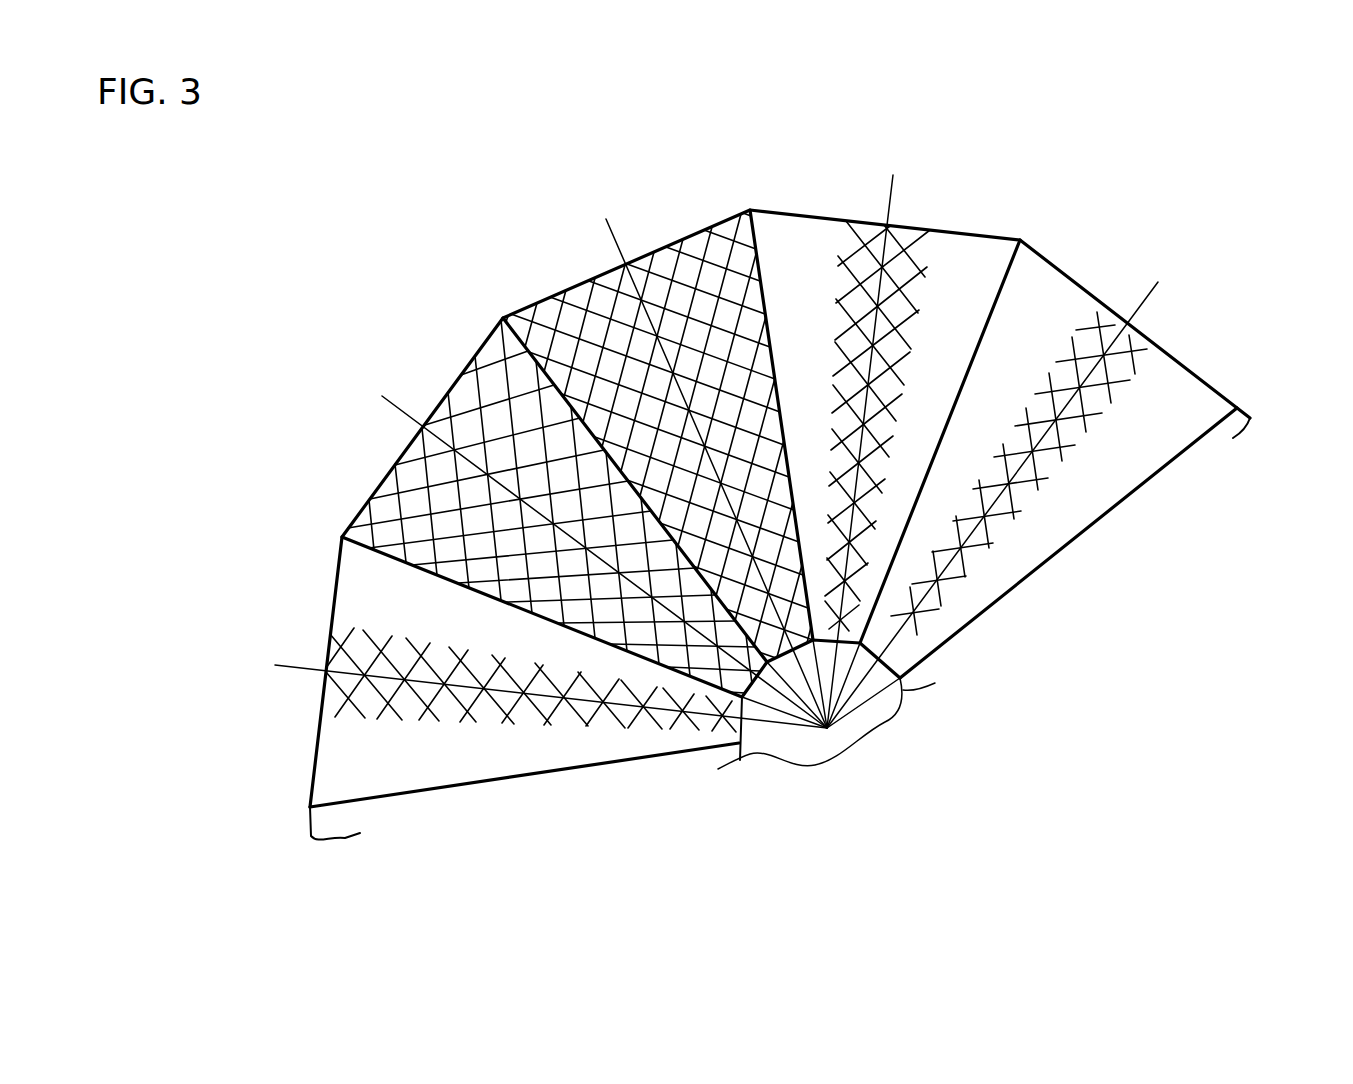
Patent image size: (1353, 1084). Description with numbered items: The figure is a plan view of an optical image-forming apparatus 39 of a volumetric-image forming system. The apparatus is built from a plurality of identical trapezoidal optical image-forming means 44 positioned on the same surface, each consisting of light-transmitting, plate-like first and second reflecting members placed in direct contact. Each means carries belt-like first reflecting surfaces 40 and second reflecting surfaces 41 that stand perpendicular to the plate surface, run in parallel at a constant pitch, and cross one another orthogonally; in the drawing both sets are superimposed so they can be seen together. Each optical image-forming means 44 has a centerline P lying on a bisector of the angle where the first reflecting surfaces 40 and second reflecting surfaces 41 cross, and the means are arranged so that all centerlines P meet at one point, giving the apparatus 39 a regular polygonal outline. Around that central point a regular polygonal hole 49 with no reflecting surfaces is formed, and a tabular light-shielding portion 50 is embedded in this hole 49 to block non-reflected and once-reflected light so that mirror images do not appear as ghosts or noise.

The optical image-forming apparatus 39 is at (793, 822).
The first reflecting surfaces 40 is at (737, 337).
The second reflecting surfaces 41 is at (718, 352).
The optical image-forming means 44 is at (549, 294).
The regular polygonal hole 49 is at (755, 729).
The light-shielding portion 50 is at (851, 731).
The centerlines P is at (710, 431).